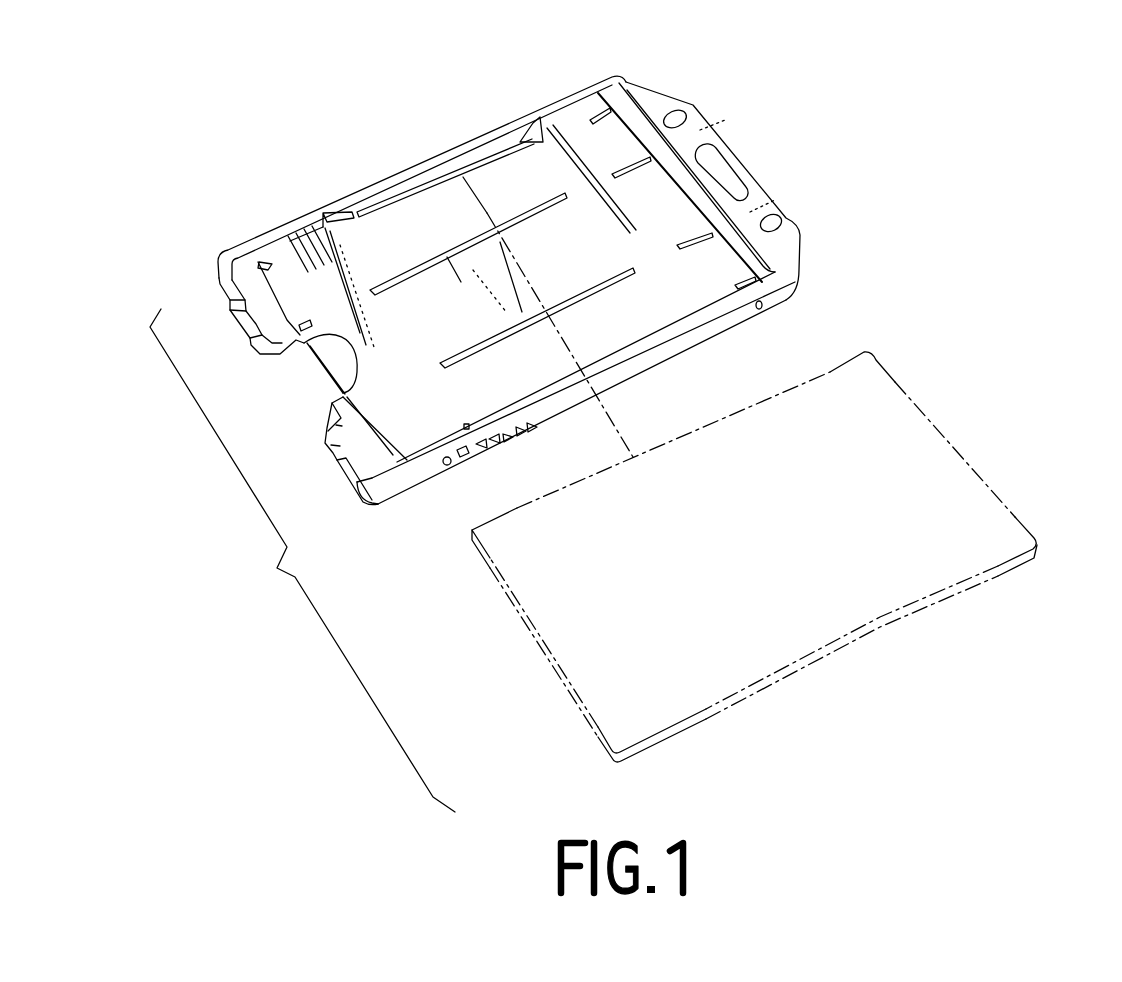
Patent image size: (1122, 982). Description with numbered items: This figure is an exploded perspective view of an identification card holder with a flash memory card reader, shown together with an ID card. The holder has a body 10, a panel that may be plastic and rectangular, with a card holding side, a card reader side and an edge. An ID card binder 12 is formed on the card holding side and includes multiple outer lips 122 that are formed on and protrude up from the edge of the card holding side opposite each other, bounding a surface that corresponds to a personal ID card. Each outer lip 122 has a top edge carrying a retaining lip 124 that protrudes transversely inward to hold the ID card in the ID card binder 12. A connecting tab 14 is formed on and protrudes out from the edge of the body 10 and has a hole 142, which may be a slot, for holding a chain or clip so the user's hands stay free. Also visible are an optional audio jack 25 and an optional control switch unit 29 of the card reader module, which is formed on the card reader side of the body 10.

The body 10 is at (448, 97).
The ID card binder 12 is at (312, 234).
The connecting tab 14 is at (792, 208).
The audio jack 25 is at (765, 306).
The control switch unit 29 is at (490, 446).
The outer lips 122 is at (240, 243).
The retaining lip 124 is at (449, 186).
The hole 142 is at (723, 176).